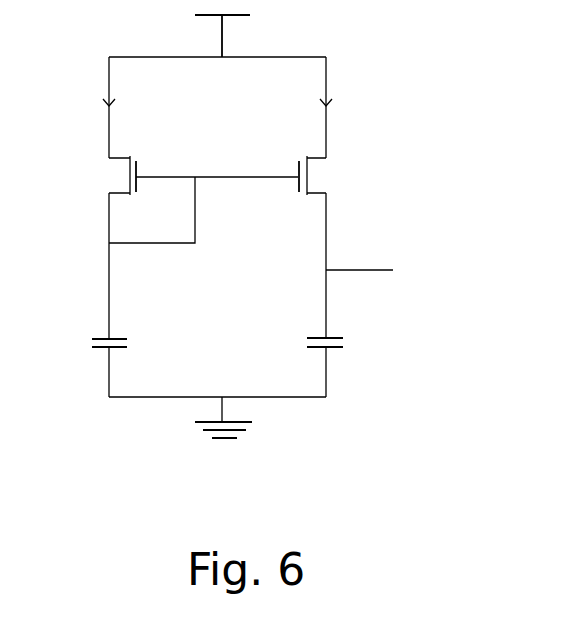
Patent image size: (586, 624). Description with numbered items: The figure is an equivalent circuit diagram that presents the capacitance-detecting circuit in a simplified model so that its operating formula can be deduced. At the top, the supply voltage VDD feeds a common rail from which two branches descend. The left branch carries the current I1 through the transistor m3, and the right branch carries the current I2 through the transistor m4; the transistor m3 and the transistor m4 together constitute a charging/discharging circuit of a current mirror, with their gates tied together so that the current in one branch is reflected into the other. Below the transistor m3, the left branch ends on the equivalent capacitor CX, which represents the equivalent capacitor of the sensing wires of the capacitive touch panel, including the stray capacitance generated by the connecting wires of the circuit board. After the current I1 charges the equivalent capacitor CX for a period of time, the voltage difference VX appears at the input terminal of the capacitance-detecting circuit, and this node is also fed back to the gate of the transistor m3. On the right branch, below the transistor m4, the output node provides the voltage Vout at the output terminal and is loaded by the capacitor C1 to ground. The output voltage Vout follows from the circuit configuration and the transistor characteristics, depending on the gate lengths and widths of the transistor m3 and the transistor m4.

The supply voltage VDD is at (247, 29).
The current I1 is at (90, 107).
The current I2 is at (344, 107).
The transistor m3 is at (179, 176).
The transistor m4 is at (335, 177).
The voltage difference VX is at (129, 258).
The voltage at the output terminal Vout is at (384, 265).
The equivalent capacitor CX is at (85, 361).
The capacitor C1 is at (345, 363).